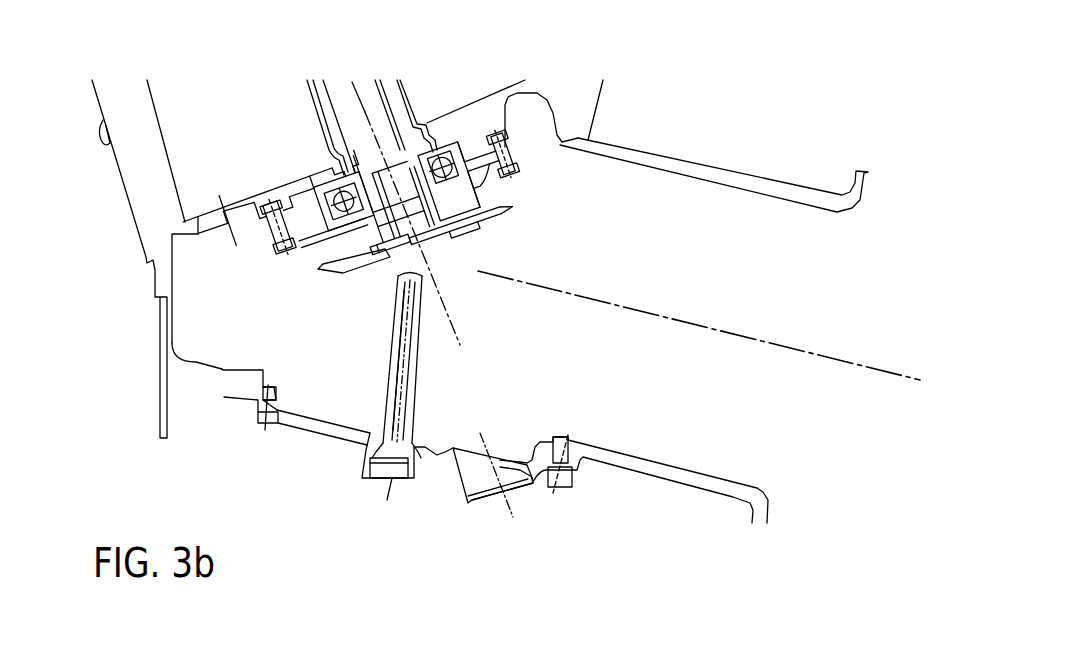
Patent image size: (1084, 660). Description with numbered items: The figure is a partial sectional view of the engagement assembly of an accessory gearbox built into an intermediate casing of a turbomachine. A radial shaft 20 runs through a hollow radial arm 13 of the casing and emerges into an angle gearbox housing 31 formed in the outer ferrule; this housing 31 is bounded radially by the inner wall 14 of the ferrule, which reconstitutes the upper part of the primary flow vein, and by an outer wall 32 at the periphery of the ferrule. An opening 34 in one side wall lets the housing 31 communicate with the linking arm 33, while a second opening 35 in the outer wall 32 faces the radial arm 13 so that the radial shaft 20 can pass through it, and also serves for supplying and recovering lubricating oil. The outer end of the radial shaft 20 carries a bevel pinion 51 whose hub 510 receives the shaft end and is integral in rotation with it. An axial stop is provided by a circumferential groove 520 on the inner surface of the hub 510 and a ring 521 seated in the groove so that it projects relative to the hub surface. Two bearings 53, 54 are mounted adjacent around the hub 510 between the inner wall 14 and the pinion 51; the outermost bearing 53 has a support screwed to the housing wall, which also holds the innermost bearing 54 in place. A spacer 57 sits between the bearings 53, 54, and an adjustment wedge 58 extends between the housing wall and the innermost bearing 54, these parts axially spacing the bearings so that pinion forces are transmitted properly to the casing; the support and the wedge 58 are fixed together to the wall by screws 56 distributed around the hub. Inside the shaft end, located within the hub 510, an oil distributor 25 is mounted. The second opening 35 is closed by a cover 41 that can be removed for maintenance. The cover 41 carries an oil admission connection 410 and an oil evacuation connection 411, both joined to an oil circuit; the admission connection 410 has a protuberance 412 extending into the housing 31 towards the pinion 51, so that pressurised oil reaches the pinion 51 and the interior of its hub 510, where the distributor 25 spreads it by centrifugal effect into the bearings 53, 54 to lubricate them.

The radial arm 13 is at (188, 139).
The inner wall 14 is at (256, 203).
The radial shaft 20 is at (353, 113).
The oil distributor 25 is at (430, 237).
The housing 31 is at (322, 390).
The outer wall 32 is at (220, 373).
The linking arm 33 is at (720, 227).
The opening 34 is at (575, 152).
The second opening 35 is at (524, 434).
The cover 41 is at (436, 470).
The bevel pinion 51 is at (510, 208).
The outermost bearing 53 is at (330, 254).
The innermost bearing 54 is at (443, 153).
The screws 56 is at (285, 253).
The spacer 57 is at (330, 170).
The adjustment wedge 58 is at (298, 200).
The oil admission connection 410 is at (428, 377).
The oil evacuation connection 411 is at (480, 432).
The protuberance 412 is at (420, 338).
The hub 510 is at (463, 233).
The circumferential groove 520 is at (350, 273).
The ring 521 is at (388, 262).